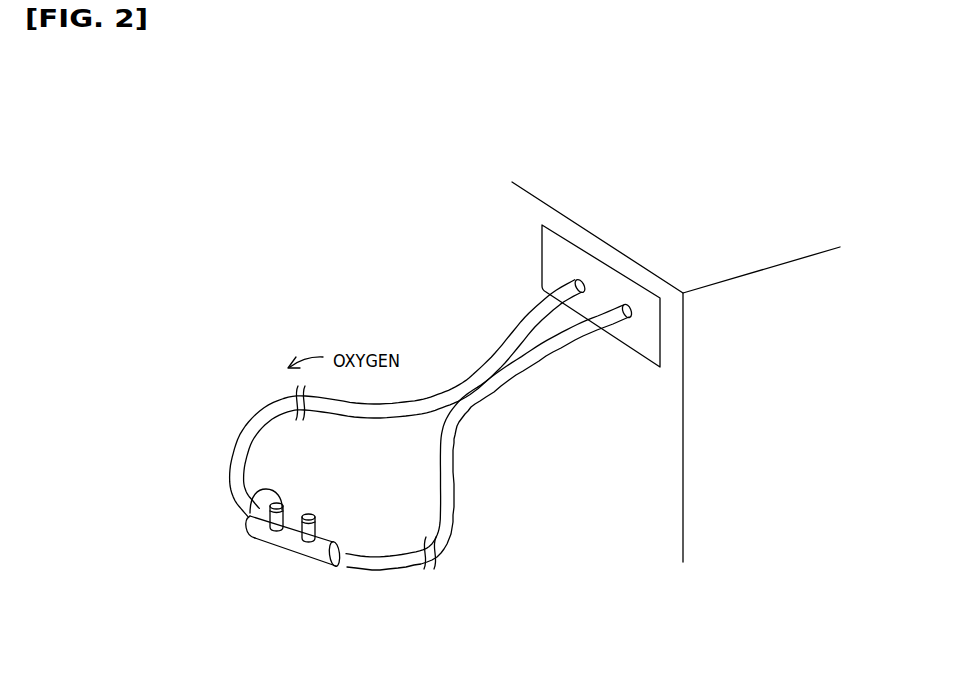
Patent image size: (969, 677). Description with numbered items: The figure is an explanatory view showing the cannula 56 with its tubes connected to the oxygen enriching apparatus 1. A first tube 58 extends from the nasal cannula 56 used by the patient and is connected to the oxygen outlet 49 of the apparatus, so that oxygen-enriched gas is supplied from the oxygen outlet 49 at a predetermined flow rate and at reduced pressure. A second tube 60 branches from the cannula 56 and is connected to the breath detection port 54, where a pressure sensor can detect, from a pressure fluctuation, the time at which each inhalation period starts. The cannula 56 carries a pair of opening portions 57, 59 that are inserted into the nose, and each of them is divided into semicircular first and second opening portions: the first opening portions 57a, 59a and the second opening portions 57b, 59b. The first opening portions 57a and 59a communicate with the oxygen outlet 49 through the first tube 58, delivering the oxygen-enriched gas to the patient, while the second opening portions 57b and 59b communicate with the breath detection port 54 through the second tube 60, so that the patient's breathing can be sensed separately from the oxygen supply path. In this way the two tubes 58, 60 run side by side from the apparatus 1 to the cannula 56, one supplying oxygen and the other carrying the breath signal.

The oxygen enriching apparatus 1 is at (745, 176).
The oxygen outlet 49 is at (580, 279).
The breath detection port 54 is at (628, 305).
The cannula 56 is at (290, 540).
The opening portion 57 is at (187, 494).
The first opening portion 57a is at (247, 512).
The second opening portion 57b is at (250, 488).
The first tube 58 is at (272, 412).
The opening portion 59 is at (370, 501).
The first opening portion 59a is at (315, 529).
The second opening portion 59b is at (311, 515).
The second tube 60 is at (455, 470).